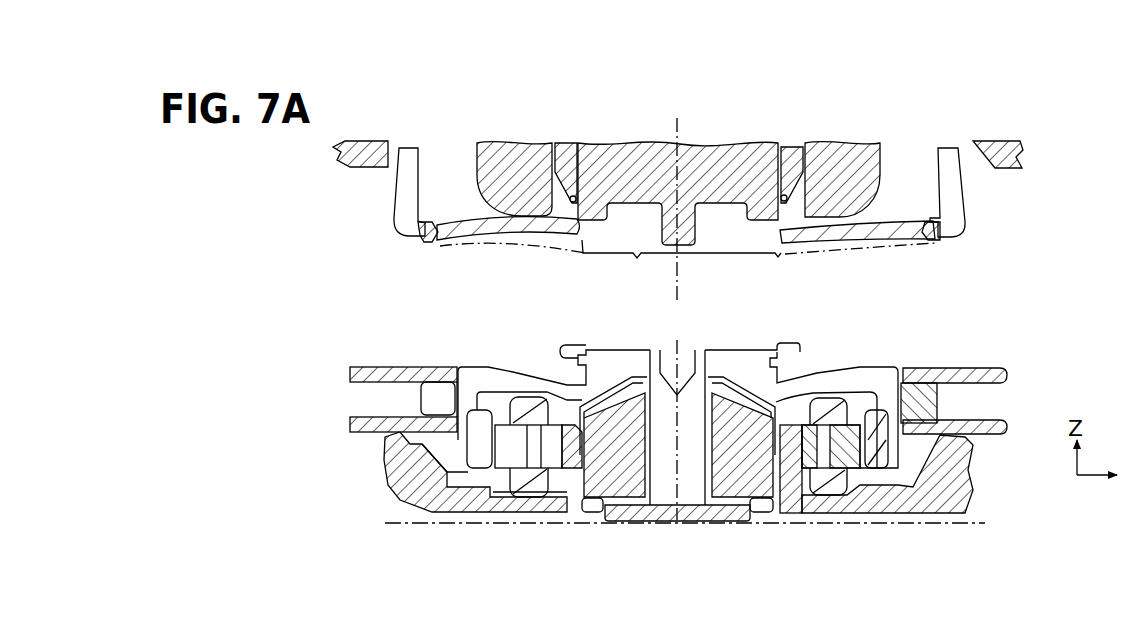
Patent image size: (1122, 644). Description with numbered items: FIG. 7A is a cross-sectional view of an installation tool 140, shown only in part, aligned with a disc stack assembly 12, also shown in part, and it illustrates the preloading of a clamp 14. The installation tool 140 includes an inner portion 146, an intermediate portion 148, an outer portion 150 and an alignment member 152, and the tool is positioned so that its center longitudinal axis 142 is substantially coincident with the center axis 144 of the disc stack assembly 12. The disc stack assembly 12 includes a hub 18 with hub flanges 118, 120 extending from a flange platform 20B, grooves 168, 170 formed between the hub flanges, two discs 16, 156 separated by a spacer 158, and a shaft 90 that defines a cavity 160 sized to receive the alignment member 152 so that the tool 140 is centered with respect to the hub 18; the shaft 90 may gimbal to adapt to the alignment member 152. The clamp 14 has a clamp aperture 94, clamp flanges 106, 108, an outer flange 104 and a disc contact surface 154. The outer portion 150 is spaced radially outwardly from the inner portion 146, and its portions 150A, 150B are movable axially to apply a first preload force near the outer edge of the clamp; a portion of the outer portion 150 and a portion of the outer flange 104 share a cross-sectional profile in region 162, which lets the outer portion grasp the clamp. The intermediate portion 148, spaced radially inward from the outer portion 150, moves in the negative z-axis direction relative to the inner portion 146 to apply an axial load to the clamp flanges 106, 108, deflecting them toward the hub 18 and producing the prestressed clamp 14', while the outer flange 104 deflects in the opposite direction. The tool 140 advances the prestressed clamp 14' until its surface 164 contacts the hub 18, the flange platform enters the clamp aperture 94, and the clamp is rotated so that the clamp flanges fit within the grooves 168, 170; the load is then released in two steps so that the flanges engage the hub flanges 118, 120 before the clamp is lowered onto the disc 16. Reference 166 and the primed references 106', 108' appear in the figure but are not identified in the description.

The installation tool 140 is at (960, 112).
The inner portion 146 is at (700, 150).
The intermediate portion 148 is at (838, 155).
The surface 164 is at (592, 218).
The center longitudinal axis 142 is at (676, 125).
The alignment member 152 is at (686, 227).
The clamp flange 106 is at (628, 222).
The clamp flange 108 is at (747, 241).
The clamp aperture 94 is at (681, 263).
The portion of outer portion 150A is at (412, 205).
The portion of outer portion 150B is at (965, 205).
The outer portion 150 is at (970, 227).
The disc contact surface 154 is at (433, 243).
The region 162 is at (424, 241).
The outer flange 104 is at (936, 240).
The clamp 14 is at (686, 213).
The prestressed clamp 14' is at (860, 263).
The recess position 106' is at (512, 275).
The recess position 108' is at (775, 281).
The disc stack assembly 12 is at (1015, 314).
The disc 16 is at (352, 372).
The disc 156 is at (352, 423).
The spacer 158 is at (420, 400).
The hub 18 is at (924, 446).
The hub flange 118 is at (584, 347).
The groove 168 is at (576, 361).
The flange 166 is at (587, 350).
The hub flange 120 is at (781, 343).
The groove 170 is at (779, 360).
The center axis 144 is at (683, 462).
The cavity 160 is at (685, 362).
The flange platform 20B is at (742, 362).
The shaft 90 is at (658, 488).